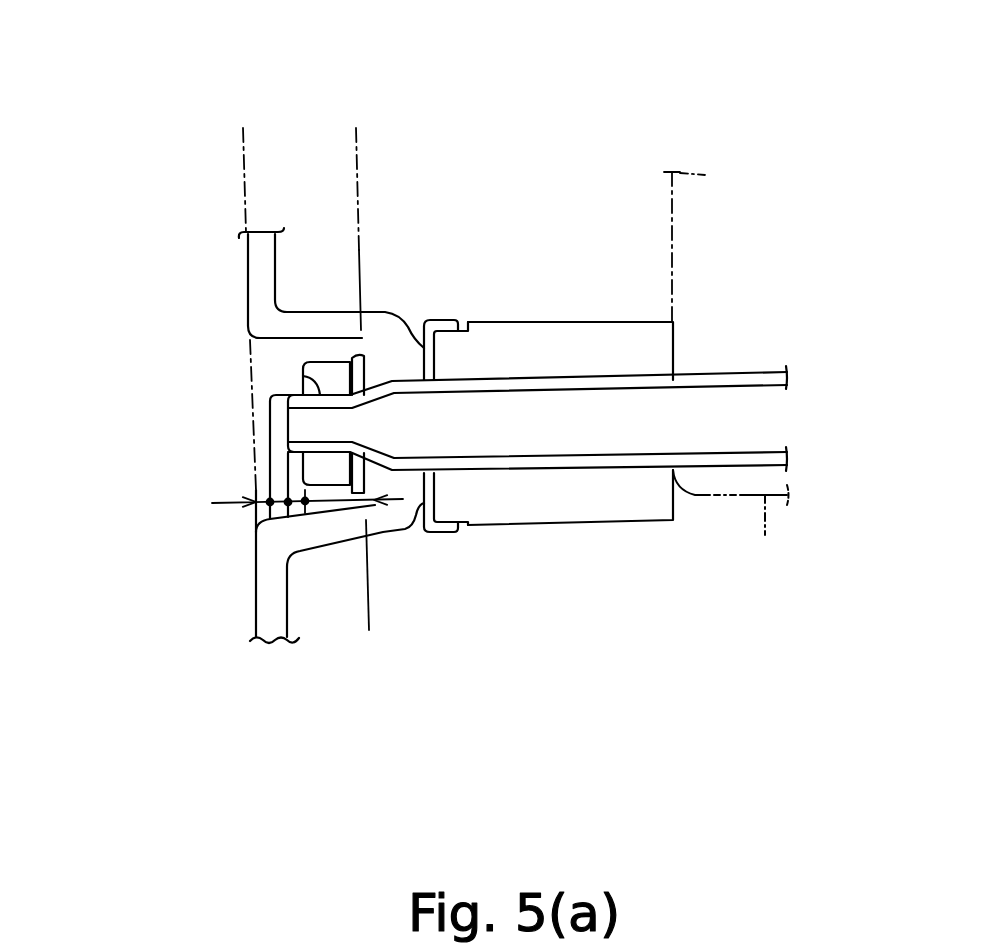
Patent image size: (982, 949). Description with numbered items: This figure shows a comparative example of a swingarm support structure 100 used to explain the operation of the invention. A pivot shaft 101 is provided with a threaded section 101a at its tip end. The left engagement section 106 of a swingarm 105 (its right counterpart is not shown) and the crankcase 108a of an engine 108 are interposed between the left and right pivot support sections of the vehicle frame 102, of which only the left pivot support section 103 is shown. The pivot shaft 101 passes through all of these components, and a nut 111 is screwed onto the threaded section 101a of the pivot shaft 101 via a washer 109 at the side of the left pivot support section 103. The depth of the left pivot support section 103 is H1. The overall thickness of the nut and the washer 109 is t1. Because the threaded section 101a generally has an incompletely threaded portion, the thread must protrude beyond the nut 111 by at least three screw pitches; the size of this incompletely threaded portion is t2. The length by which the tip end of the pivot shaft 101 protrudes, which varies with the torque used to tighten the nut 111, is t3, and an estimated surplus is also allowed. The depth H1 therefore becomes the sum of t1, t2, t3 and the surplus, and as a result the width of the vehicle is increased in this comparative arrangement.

The swingarm support structure 100 is at (667, 127).
The pivot shaft 101 is at (735, 375).
The threaded section 101a is at (307, 377).
The vehicle frame 102 is at (209, 237).
The left pivot support section 103 is at (295, 341).
The swingarm 105 is at (505, 300).
The left engagement section 106 is at (595, 322).
The engine 108 is at (722, 500).
The crankcase 108a is at (765, 535).
The washer 109 is at (363, 356).
The nut 111 is at (325, 362).
The overall thickness of the bolt and the washer t1 is at (330, 504).
The size of the incompletely threaded section t2 is at (299, 505).
The protruding length of the pivot shaft tip end t3 is at (365, 508).
The depth of the left pivot support section H1 is at (244, 142).